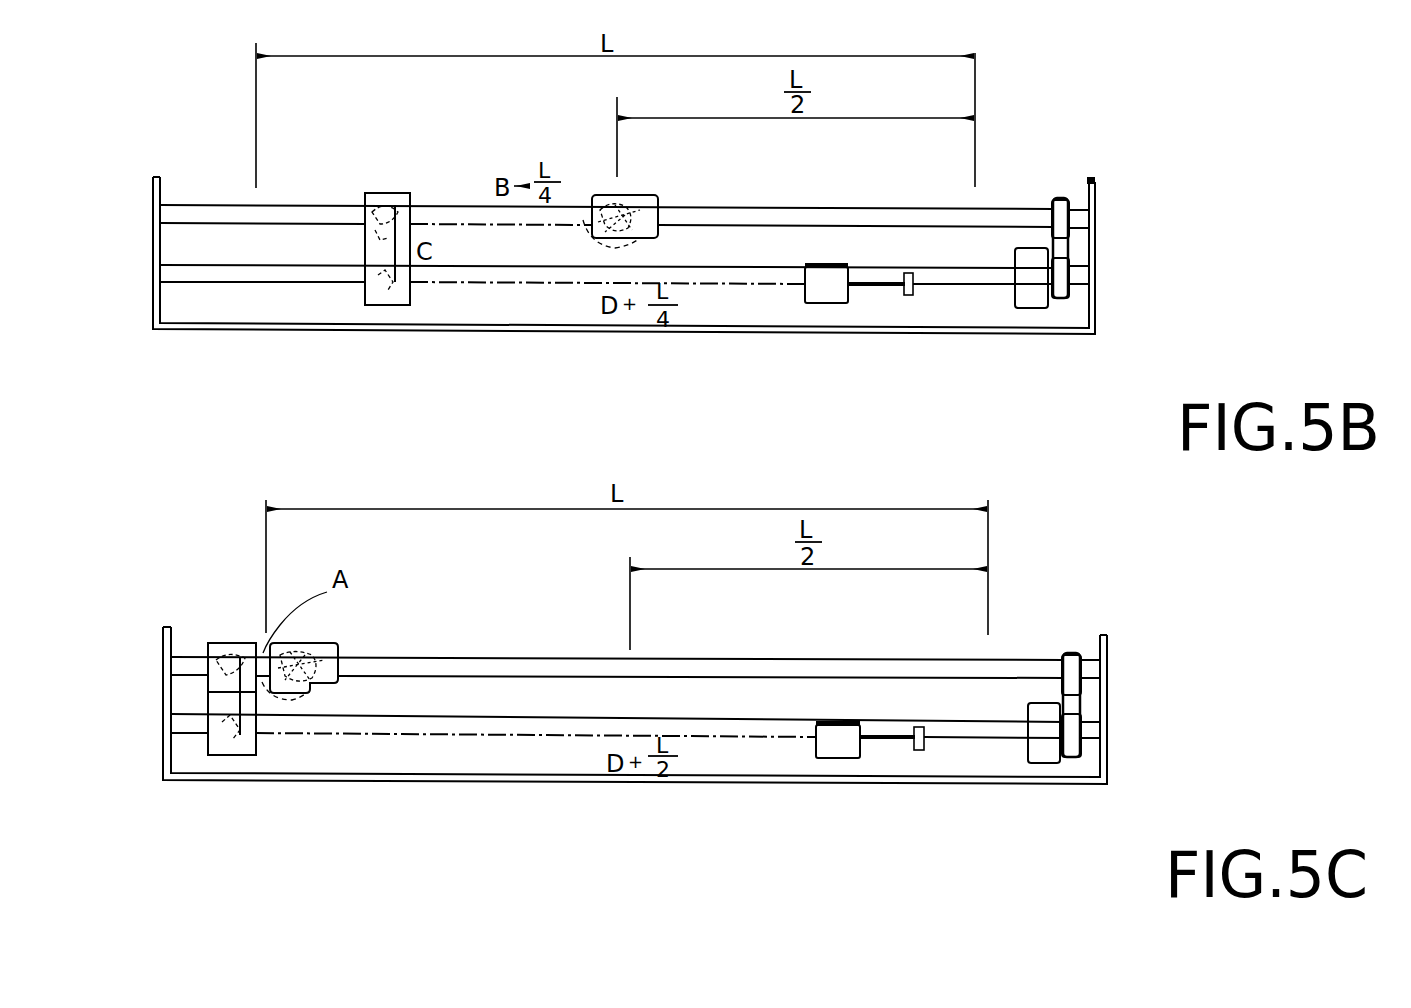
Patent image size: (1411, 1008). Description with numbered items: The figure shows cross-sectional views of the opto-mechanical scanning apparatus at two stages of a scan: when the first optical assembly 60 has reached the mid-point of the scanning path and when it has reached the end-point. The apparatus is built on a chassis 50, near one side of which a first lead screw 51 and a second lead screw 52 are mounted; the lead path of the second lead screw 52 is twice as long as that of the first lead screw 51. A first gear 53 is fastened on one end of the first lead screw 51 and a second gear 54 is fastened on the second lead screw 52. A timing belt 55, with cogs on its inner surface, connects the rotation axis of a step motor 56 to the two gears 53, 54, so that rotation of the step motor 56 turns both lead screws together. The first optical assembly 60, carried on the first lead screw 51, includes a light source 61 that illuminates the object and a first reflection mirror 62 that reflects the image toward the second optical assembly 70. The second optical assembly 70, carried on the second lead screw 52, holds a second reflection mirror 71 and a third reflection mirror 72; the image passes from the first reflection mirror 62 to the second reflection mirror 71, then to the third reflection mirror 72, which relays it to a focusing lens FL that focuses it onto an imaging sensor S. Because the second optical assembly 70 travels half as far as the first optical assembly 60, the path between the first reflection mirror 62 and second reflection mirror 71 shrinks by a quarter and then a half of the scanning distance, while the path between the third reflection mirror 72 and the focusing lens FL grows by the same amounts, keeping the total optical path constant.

In FIG. 5B, the chassis 50 is at (155, 242).
In FIG. 5C, the chassis 50 is at (165, 700).
In FIG. 5B, the first lead screw 51 is at (300, 212).
In FIG. 5C, the first lead screw 51 is at (530, 665).
In FIG. 5B, the second lead screw 52 is at (267, 275).
In FIG. 5C, the second lead screw 52 is at (540, 720).
In FIG. 5B, the first gear 53 is at (1068, 203).
In FIG. 5C, the first gear 53 is at (1080, 655).
In FIG. 5B, the second gear 54 is at (1068, 292).
In FIG. 5C, the second gear 54 is at (1080, 752).
In FIG. 5B, the timing belt 55 is at (1060, 245).
In FIG. 5C, the timing belt 55 is at (1072, 703).
In FIG. 5B, the step motor 56 is at (1028, 306).
In FIG. 5C, the step motor 56 is at (1043, 762).
In FIG. 5B, the first optical assembly 60 is at (665, 193).
In FIG. 5C, the first optical assembly 60 is at (372, 708).
In FIG. 5B, the light source 61 is at (647, 200).
In FIG. 5C, the light source 61 is at (330, 667).
In FIG. 5C, the first reflection mirror 62 is at (297, 692).
In FIG. 5B, the second optical assembly 70 is at (384, 262).
In FIG. 5C, the second optical assembly 70 is at (235, 703).
In FIG. 5B, the second reflection mirror 71 is at (400, 210).
In FIG. 5C, the second reflection mirror 71 is at (243, 665).
In FIG. 5B, the third reflection mirror 72 is at (399, 308).
In FIG. 5C, the third reflection mirror 72 is at (238, 745).
In FIG. 5B, the focusing lens FL is at (832, 302).
In FIG. 5C, the focusing lens FL is at (846, 758).
In FIG. 5B, the imaging sensor S is at (908, 297).
In FIG. 5C, the imaging sensor S is at (918, 752).